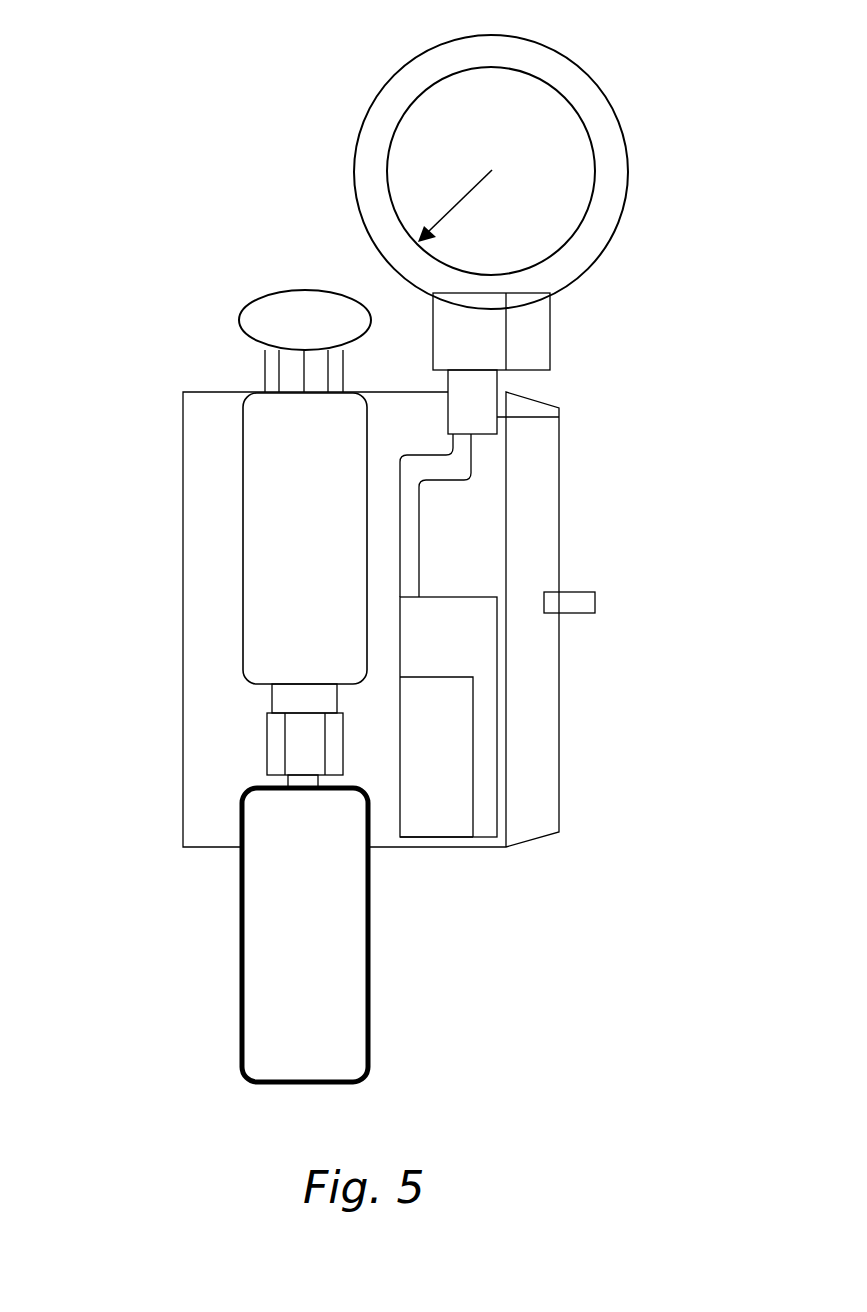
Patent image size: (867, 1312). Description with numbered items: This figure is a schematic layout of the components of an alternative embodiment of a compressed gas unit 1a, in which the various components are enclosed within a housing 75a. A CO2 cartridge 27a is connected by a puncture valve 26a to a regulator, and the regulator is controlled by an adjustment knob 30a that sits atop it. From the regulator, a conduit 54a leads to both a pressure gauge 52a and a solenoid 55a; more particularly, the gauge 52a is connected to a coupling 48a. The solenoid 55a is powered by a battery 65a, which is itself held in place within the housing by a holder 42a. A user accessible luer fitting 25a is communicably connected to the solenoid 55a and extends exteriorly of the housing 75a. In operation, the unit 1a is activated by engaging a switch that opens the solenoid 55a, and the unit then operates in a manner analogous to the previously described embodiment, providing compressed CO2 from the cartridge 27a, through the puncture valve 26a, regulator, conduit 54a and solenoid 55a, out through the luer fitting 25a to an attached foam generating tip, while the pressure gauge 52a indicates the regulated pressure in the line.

The compressed gas unit 1a is at (183, 114).
The luer fitting 25a is at (580, 592).
The puncture valve 26a is at (267, 745).
The CO2 cartridge 27a is at (242, 966).
The adjustment knob 30a is at (295, 288).
The holder 42a is at (430, 820).
The coupling 48a is at (560, 408).
The pressure gauge 52a is at (541, 147).
The conduit 54a is at (471, 462).
The solenoid 55a is at (480, 615).
The battery 65a is at (473, 772).
The housing 75a is at (208, 517).